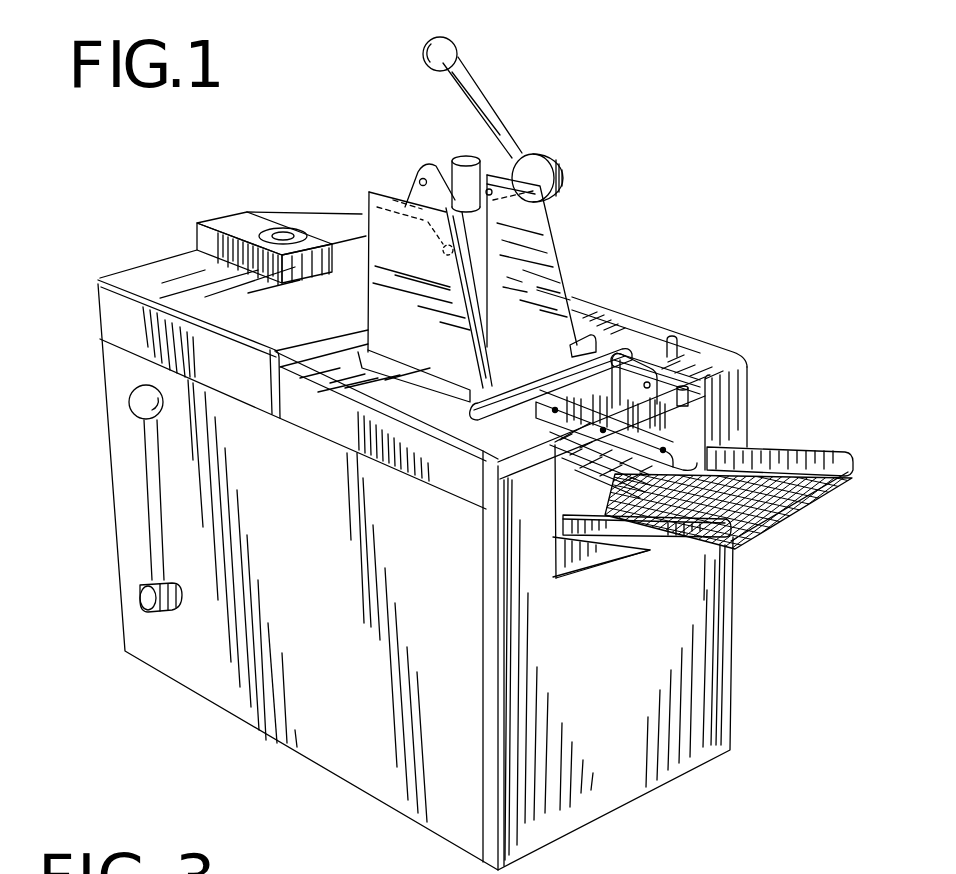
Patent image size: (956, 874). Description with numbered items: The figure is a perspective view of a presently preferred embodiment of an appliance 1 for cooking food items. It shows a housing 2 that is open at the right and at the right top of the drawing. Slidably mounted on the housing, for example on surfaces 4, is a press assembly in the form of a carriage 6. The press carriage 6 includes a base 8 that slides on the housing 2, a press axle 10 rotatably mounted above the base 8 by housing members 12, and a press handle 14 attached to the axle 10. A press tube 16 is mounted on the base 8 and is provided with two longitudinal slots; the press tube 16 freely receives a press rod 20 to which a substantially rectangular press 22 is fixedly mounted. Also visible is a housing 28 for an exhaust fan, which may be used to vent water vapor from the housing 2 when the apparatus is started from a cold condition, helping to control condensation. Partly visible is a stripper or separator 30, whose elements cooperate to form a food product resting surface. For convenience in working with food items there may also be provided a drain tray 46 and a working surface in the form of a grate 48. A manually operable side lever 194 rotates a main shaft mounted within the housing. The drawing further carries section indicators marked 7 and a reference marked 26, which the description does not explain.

The appliance 1 is at (126, 165).
The housing 2 is at (446, 627).
The surfaces 4 is at (485, 437).
The carriage 6 is at (602, 184).
The section view indicator 7 is at (772, 395).
The base 8 is at (418, 414).
The press axle 10 is at (368, 193).
The housing members 12 is at (425, 348).
The press handle 14 is at (452, 77).
The press tube 16 is at (474, 271).
The press rod 20 is at (465, 155).
The press 22 is at (552, 392).
The pivot bracket 26 is at (418, 188).
The housing for exhaust fan 28 is at (202, 243).
The separator 30 is at (562, 490).
The drain tray 46 is at (695, 527).
The grate 48 is at (760, 493).
The side lever 194 is at (150, 508).